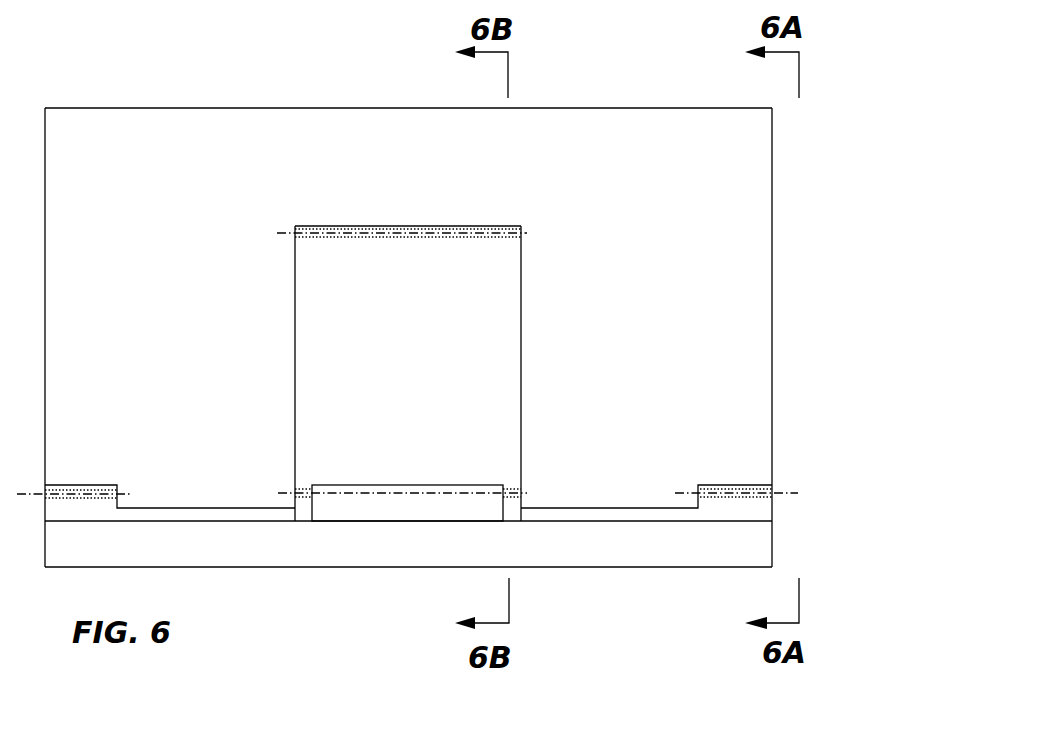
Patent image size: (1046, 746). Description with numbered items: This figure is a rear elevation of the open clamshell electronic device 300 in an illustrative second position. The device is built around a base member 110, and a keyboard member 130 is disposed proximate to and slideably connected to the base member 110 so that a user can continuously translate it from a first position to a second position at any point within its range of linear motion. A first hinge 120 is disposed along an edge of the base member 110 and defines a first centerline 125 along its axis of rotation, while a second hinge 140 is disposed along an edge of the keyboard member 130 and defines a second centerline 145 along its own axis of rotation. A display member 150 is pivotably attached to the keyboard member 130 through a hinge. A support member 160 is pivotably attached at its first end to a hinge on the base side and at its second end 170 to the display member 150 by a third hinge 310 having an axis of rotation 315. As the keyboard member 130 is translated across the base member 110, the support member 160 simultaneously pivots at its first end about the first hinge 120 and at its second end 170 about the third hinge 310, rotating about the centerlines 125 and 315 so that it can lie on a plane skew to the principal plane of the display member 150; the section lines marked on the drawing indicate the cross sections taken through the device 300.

The clamshell electronic device 300 is at (792, 126).
The display member 150 is at (772, 279).
The base member 110 is at (726, 546).
The keyboard member 130 is at (727, 511).
The second hinge 140 is at (737, 485).
The second centerline 145 is at (783, 492).
The first centerline 125 is at (413, 493).
The first hinge 120 is at (510, 520).
The support member 160 is at (336, 242).
The third hinge 310 is at (475, 230).
The axis of rotation 315 is at (503, 232).
The second end 170 is at (391, 343).